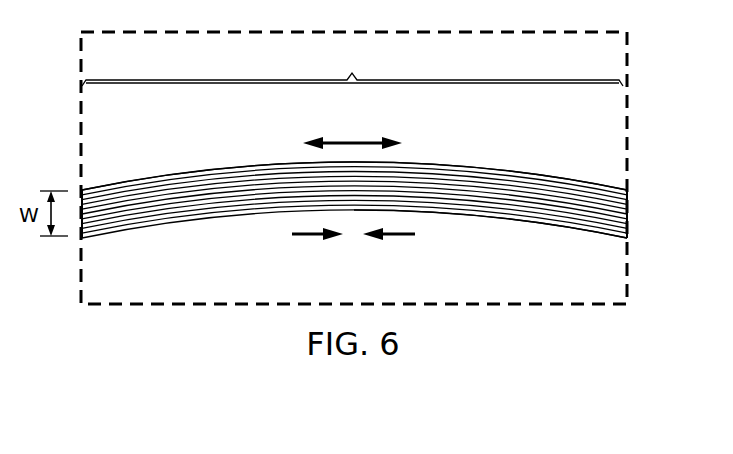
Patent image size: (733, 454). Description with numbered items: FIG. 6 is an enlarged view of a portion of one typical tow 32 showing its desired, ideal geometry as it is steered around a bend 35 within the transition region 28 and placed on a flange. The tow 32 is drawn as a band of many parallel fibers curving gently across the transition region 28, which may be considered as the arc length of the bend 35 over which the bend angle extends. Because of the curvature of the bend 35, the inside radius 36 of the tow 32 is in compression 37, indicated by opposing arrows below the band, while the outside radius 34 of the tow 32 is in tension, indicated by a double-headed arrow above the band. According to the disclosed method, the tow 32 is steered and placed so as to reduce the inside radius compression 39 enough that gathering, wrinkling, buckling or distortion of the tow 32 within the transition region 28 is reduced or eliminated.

The transition region 28 is at (352, 65).
The tow 32 is at (241, 216).
The outside radius 34 is at (440, 151).
The bend 35 is at (208, 143).
The inside radius 36 is at (440, 226).
The compression 37 is at (308, 237).
The inside radius compression 39 is at (352, 140).